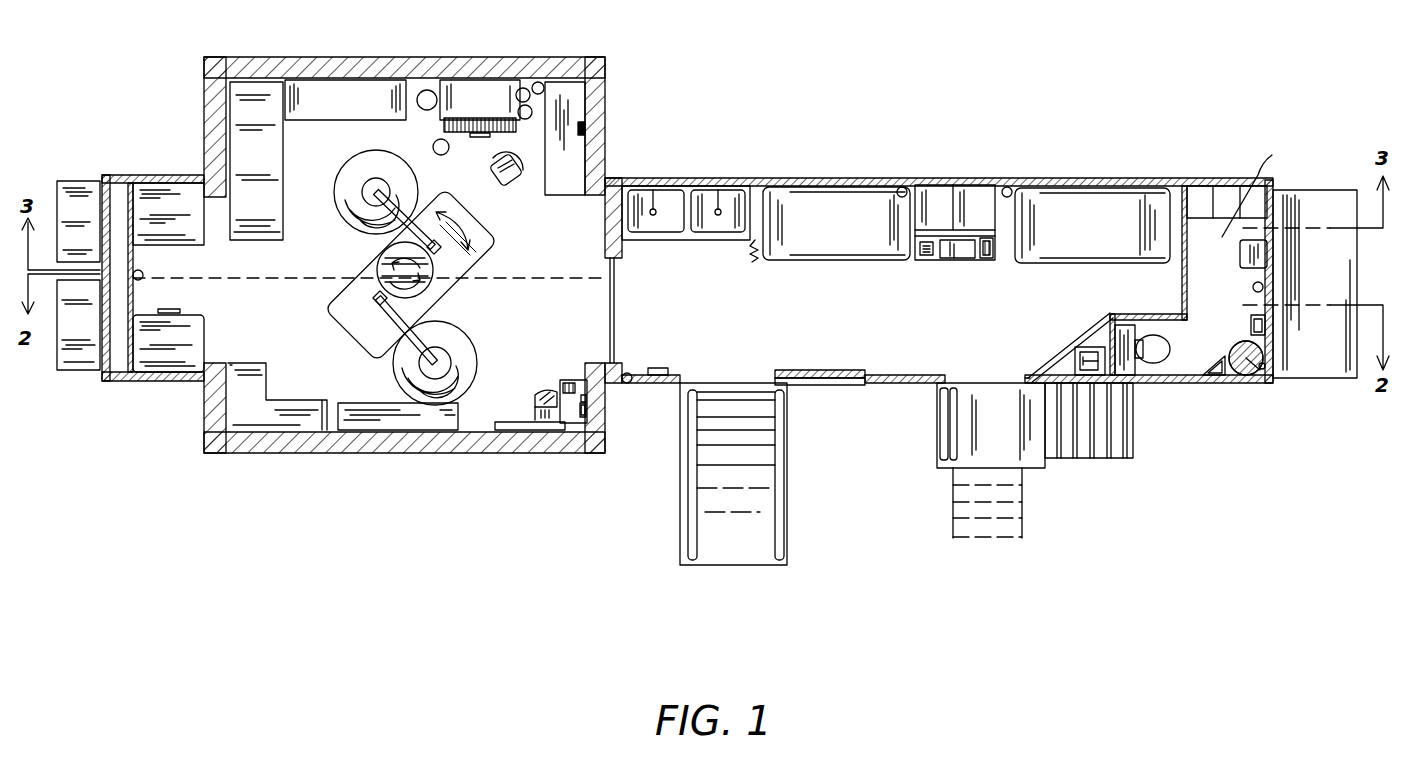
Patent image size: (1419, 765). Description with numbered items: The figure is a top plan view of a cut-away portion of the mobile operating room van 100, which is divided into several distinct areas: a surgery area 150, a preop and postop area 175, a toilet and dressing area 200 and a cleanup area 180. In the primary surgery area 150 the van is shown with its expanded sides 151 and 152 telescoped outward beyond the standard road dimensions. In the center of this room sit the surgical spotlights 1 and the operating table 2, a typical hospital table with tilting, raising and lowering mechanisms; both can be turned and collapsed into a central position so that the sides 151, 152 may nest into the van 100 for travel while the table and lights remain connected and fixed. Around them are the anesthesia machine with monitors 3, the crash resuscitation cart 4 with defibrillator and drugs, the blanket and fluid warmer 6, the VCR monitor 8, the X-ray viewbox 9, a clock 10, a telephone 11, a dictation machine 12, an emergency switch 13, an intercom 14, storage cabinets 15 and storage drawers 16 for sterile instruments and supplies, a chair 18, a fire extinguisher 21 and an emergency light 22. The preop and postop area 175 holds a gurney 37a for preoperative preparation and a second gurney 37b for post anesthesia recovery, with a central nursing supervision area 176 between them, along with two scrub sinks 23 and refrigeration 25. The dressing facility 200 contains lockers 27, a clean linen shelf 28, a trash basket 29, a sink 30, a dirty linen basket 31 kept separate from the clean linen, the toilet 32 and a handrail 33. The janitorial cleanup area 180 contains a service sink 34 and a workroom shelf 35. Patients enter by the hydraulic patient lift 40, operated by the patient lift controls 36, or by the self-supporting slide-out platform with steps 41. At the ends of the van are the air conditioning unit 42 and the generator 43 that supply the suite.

The surgical spotlights 1 is at (470, 353).
The operating room table 2 is at (497, 232).
The anesthesia machine with monitors 3 is at (462, 92).
The crash resuscitation cart 4 is at (158, 355).
The blanket and fluid warmer 6 is at (155, 187).
The VCR monitor 8 is at (380, 420).
The X-ray viewbox 9 is at (513, 420).
The clock 10 is at (590, 420).
The telephone 11 is at (590, 395).
The dictation machine 12 is at (567, 380).
The emergency switch 13 is at (582, 162).
The intercom 14 is at (587, 128).
The storage cabinets 15 is at (975, 195).
The storage drawers 16 is at (289, 360).
The chair 18 is at (516, 190).
The fire extinguisher 21 is at (143, 272).
The emergency light 22 is at (622, 248).
The scrub sinks 23 is at (708, 222).
The refrigeration 25 is at (955, 276).
The lockers 27 is at (1228, 185).
The clean linen shelf 28 is at (1268, 257).
The trash basket 29 is at (1266, 327).
The sink 30 is at (1266, 352).
The dirty linen basket 31 is at (1215, 378).
The toilet 32 is at (1170, 348).
The handrail 33 is at (1147, 318).
The service sink 34 is at (1133, 385).
The workroom shelf 35 is at (1040, 376).
The patient lift controls 36 is at (660, 368).
The gurney 37a is at (848, 246).
The gurney 37b is at (1088, 245).
The patient lift 40 is at (745, 464).
The self supporting slide out platform with steps 41 is at (1010, 439).
The air conditioning unit 42 is at (82, 190).
The generator 43 is at (1330, 278).
The van 100 is at (738, 277).
The surgery area 150 is at (368, 268).
The expanded side 151 is at (605, 100).
The expanded side 152 is at (600, 455).
The preop and postop area 175 is at (820, 358).
The central nursing supervision area 176 is at (930, 258).
The cleanup area 180 is at (1088, 328).
The toilet and dressing area 200 is at (1254, 186).